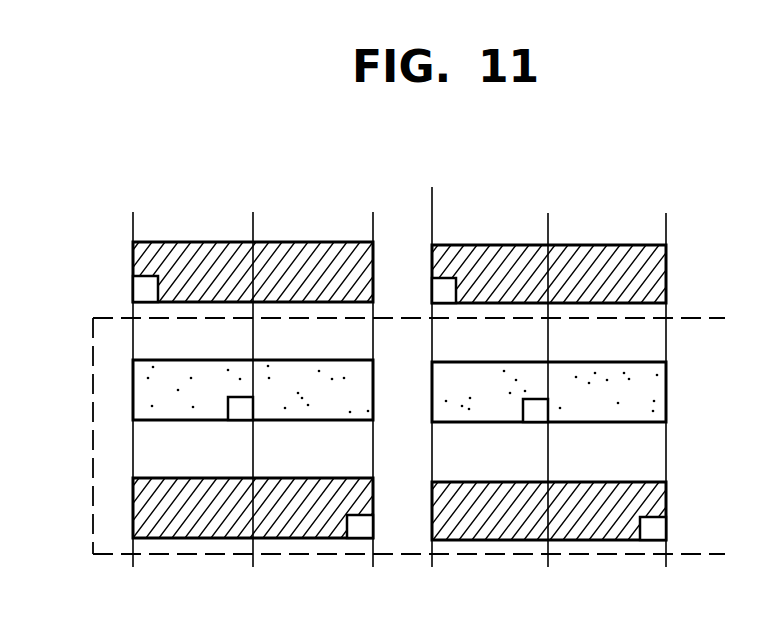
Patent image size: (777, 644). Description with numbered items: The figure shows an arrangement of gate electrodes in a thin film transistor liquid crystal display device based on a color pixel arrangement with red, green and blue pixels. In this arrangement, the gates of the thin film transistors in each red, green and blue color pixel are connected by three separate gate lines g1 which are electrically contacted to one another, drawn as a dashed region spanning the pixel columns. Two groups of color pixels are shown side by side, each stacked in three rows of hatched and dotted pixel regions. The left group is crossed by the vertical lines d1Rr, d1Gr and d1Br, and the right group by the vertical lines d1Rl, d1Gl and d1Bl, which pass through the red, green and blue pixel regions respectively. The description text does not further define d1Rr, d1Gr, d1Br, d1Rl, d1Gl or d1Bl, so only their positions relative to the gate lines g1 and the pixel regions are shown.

The right red data line d1Rr is at (127, 377).
The right green data line d1Gr is at (247, 377).
The right blue data line d1Br is at (364, 377).
The left red data line d1Rl is at (422, 365).
The left green data line d1Gl is at (539, 379).
The left blue data line d1Bl is at (656, 379).
The gate line g1 is at (725, 437).